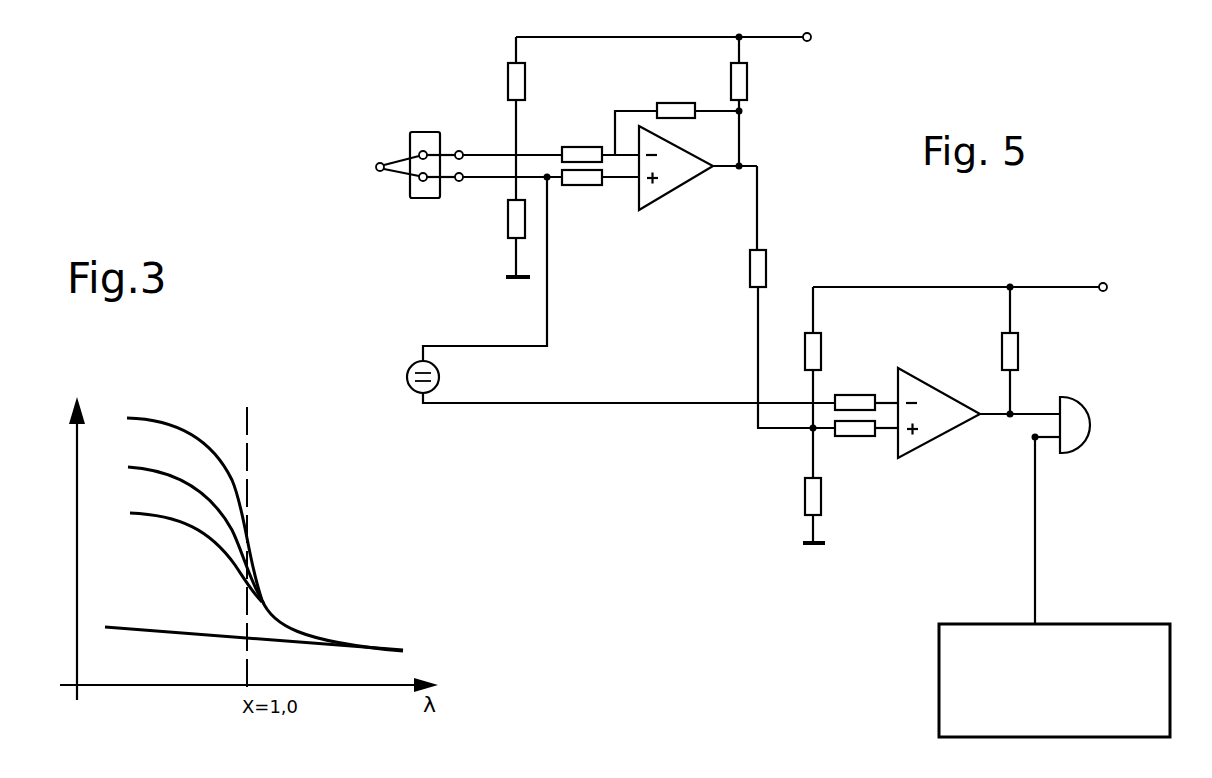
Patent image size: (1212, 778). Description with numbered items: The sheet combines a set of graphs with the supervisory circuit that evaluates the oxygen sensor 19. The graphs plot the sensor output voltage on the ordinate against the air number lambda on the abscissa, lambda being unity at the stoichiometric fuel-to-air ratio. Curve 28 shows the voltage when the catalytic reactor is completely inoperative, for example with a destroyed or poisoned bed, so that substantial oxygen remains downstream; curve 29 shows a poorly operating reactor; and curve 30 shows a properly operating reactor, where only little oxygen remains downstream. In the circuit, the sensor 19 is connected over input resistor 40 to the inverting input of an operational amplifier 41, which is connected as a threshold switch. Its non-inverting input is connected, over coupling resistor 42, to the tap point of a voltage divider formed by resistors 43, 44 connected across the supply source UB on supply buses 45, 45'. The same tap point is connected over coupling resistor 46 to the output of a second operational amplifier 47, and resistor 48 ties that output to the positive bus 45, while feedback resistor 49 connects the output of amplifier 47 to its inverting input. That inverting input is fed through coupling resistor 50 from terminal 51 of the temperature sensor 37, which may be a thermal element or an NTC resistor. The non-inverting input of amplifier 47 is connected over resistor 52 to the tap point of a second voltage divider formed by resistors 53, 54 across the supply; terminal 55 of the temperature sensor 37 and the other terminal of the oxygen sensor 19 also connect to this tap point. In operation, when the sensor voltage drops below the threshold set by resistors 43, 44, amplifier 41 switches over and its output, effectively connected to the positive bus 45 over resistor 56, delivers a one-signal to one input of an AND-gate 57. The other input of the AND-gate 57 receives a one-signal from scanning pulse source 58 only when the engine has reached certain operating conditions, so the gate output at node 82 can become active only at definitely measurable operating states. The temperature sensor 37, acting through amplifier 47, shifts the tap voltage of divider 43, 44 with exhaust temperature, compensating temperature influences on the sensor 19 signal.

In FIG. 3, the curve 28 is at (188, 434).
In FIG. 3, the curve 29 is at (197, 487).
In FIG. 3, the curve 30 is at (200, 532).
In FIG. 5, the oxygen sensor 19 is at (440, 378).
In FIG. 5, the temperature sensor 37 is at (393, 148).
In FIG. 5, the input resistor 40 is at (859, 396).
In FIG. 5, the operational amplifier 41 is at (927, 395).
In FIG. 5, the coupling resistor 42 is at (851, 438).
In FIG. 5, the voltage divider resistor 43 is at (821, 352).
In FIG. 5, the voltage divider resistor 44 is at (822, 497).
In FIG. 5, the positive supply bus 45 is at (827, 174).
In FIG. 5, the supply bus 45' is at (669, 418).
In FIG. 5, the coupling resistor 46 is at (767, 266).
In FIG. 5, the second operational amplifier 47 is at (675, 182).
In FIG. 5, the resistor 48 is at (748, 90).
In FIG. 5, the feedback resistor 49 is at (687, 118).
In FIG. 5, the coupling resistor 50 is at (582, 148).
In FIG. 5, the terminal 51 is at (459, 150).
In FIG. 5, the coupling resistor 52 is at (578, 186).
In FIG. 5, the voltage divider resistor 53 is at (526, 81).
In FIG. 5, the voltage divider resistor 54 is at (509, 218).
In FIG. 5, the terminal 55 is at (459, 181).
In FIG. 5, the resistor 56 is at (1019, 358).
In FIG. 5, the AND-gate 57 is at (1077, 415).
In FIG. 5, the scanning pulse source 58 is at (1063, 624).
In FIG. 5, the signal line node 82 is at (1034, 441).